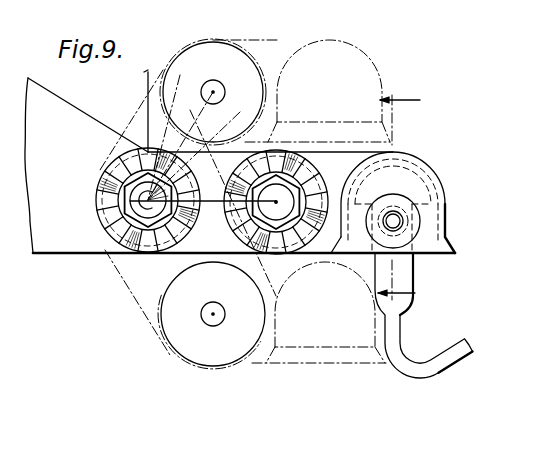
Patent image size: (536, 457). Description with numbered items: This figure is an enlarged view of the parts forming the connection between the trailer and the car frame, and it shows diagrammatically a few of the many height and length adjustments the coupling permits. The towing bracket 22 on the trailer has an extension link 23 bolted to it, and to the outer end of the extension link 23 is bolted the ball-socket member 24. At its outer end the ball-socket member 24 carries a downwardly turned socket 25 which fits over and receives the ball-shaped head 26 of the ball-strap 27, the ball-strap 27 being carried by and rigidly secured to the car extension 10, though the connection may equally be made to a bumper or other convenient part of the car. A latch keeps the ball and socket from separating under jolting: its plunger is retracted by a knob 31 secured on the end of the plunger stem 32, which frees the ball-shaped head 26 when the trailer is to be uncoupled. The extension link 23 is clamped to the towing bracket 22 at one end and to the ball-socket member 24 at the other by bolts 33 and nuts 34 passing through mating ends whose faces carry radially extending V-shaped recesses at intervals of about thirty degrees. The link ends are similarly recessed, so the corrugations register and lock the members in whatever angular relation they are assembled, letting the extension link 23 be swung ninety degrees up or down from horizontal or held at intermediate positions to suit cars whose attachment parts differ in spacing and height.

The car extension 10 is at (407, 198).
The towing bracket 22 is at (85, 113).
The extension link 23 is at (192, 254).
The ball-socket member 24 is at (403, 158).
The socket 25 is at (437, 185).
The ball-shaped head 26 is at (422, 173).
The ball-strap 27 is at (394, 337).
The knob 31 is at (421, 222).
The plunger stem 32 is at (397, 220).
The bolts 33 is at (130, 203).
The nuts 34 is at (113, 240).